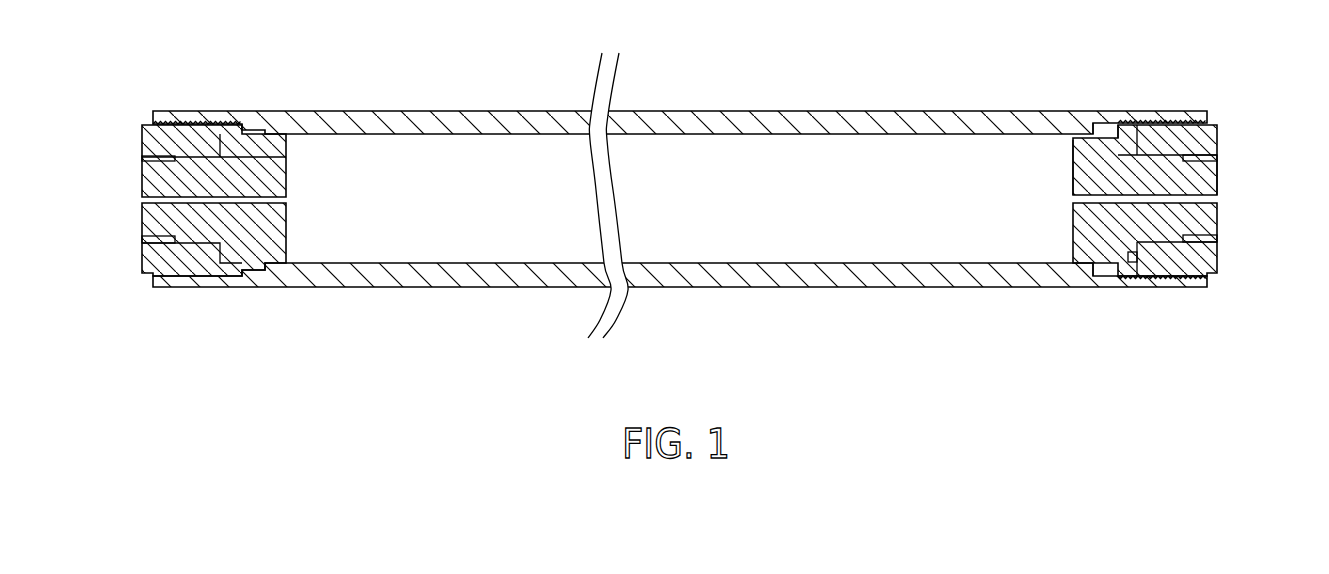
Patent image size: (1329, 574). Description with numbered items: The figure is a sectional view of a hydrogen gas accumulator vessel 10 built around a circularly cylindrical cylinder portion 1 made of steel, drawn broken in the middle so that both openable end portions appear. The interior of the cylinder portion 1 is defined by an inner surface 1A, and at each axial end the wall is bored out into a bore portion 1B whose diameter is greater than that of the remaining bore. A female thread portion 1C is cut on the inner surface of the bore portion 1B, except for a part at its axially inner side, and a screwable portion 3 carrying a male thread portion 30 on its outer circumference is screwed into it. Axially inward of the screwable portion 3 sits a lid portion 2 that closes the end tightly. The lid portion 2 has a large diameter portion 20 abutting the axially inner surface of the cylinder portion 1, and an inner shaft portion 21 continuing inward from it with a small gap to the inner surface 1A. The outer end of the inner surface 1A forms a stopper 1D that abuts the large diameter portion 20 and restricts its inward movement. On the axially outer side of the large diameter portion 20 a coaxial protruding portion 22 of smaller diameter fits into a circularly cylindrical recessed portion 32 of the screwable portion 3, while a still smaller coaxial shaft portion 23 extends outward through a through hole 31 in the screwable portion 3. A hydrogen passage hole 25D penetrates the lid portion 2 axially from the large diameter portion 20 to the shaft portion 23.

The circularly cylindrical cylinder portion 1 is at (673, 277).
The inner surface 1A is at (775, 262).
The bore portion 1B is at (1112, 123).
The female thread portion 1C is at (1200, 142).
The stopper 1D is at (1085, 125).
The lid portion 2 is at (286, 168).
The screwable portion 3 is at (150, 258).
The hydrogen gas accumulator vessel 10 is at (638, 398).
The large diameter portion 20 is at (1100, 274).
The inner shaft portion 21 is at (1084, 179).
The protruding portion 22 is at (1120, 124).
The shaft portion 23 is at (1182, 123).
The hydrogen passage hole 25D is at (1218, 198).
The male thread portion 30 is at (174, 122).
The through hole 31 is at (1173, 224).
The recessed portion 32 is at (1125, 274).